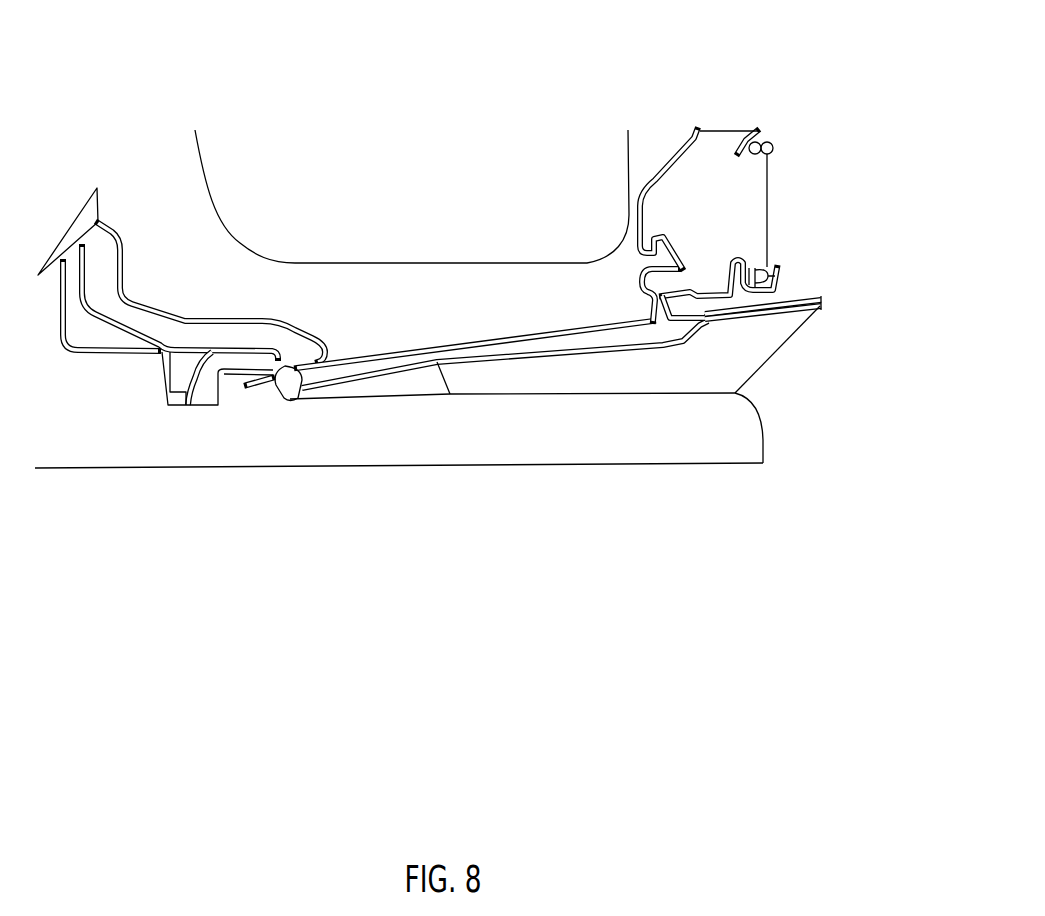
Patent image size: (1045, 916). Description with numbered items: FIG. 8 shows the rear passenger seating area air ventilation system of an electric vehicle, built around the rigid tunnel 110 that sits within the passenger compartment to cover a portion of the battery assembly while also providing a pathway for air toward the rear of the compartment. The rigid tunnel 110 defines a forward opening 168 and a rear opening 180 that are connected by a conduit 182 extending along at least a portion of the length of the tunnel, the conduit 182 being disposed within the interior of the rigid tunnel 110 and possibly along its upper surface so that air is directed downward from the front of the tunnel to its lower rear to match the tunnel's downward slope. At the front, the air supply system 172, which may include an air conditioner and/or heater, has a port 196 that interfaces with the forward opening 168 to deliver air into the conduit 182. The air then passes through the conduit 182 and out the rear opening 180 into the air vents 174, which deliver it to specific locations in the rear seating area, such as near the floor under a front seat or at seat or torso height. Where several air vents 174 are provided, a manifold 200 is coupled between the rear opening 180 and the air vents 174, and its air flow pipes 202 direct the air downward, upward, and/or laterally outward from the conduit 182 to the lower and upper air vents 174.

The rigid tunnel 110 is at (763, 310).
The forward opening 168 is at (665, 320).
The air supply system 172 is at (715, 180).
The air vents 174 is at (58, 168).
The rear opening 180 is at (288, 400).
The conduit 182 is at (497, 345).
The port 196 is at (650, 317).
The manifold 200 is at (300, 333).
The air flow pipes 202 is at (182, 333).